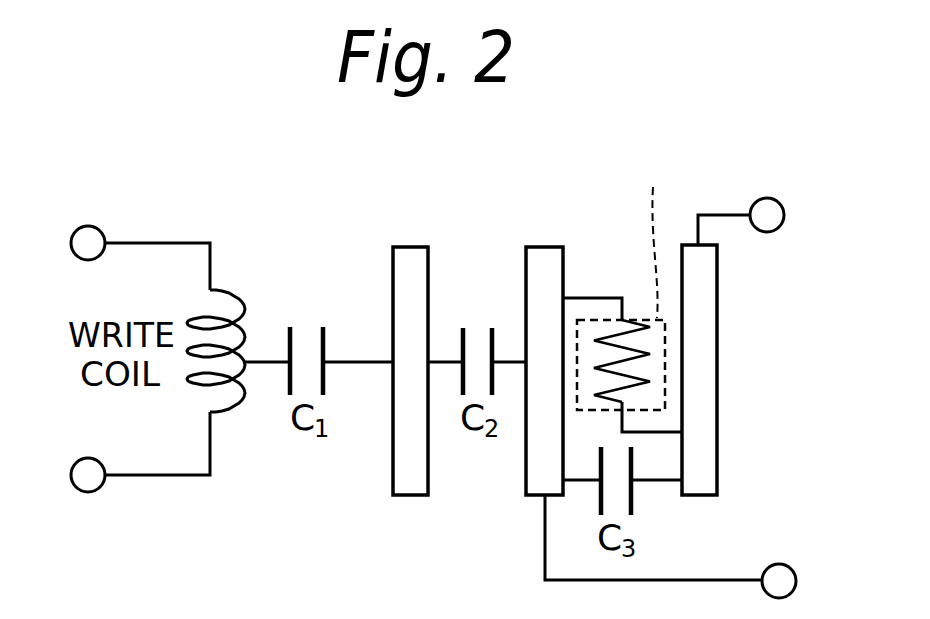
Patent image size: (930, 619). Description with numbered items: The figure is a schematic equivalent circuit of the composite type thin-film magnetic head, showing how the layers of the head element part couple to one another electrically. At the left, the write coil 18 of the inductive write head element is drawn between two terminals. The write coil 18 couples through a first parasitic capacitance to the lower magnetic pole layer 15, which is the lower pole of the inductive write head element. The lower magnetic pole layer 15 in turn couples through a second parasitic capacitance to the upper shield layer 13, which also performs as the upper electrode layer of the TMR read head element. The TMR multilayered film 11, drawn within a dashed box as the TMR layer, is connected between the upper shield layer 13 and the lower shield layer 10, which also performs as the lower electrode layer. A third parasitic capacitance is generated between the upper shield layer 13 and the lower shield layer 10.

The lower shield layer 10 is at (703, 348).
The TMR multilayered film 11 is at (653, 307).
The upper shield layer 13 is at (542, 325).
The lower magnetic pole layer 15 is at (408, 305).
The write coil 18 is at (222, 292).